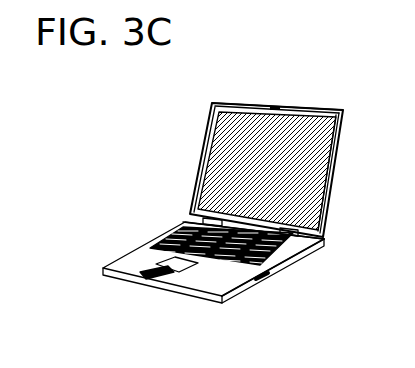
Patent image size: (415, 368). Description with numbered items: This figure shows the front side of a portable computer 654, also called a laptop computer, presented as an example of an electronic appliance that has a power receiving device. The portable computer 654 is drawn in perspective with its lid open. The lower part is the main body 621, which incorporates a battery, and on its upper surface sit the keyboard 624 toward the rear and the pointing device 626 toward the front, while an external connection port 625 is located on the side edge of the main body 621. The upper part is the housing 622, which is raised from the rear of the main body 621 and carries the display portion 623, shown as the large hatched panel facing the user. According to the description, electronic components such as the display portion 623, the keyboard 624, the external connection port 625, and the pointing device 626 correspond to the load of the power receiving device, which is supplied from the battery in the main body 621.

The main body 621 is at (130, 267).
The housing 622 is at (214, 104).
The display portion 623 is at (215, 168).
The keyboard 624 is at (285, 262).
The external connection port 625 is at (261, 278).
The pointing device 626 is at (178, 265).
The portable computer 654 is at (300, 104).